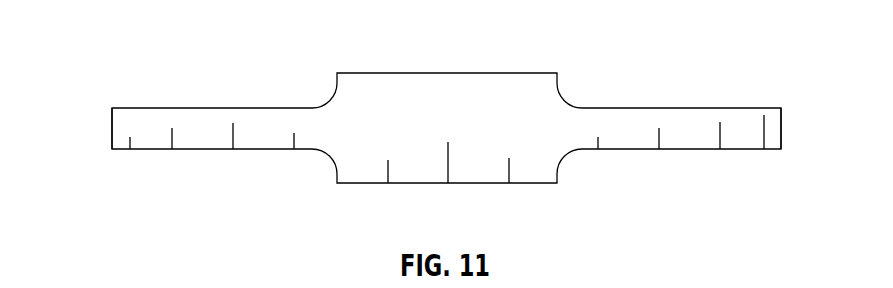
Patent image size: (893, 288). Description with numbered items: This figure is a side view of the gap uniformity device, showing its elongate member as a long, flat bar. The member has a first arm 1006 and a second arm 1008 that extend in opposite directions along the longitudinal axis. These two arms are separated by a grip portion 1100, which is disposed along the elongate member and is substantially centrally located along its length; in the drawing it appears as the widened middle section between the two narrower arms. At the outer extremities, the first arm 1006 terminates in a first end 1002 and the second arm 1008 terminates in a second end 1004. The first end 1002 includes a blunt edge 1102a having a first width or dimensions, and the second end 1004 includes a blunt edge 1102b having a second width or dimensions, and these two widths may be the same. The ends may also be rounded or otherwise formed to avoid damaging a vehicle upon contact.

The grip portion 1100 is at (460, 87).
The first end 1002 is at (125, 108).
The second end 1004 is at (760, 108).
The first arm 1006 is at (213, 118).
The second arm 1008 is at (640, 122).
The blunt edge 1102a is at (112, 130).
The blunt edge 1102b is at (782, 130).